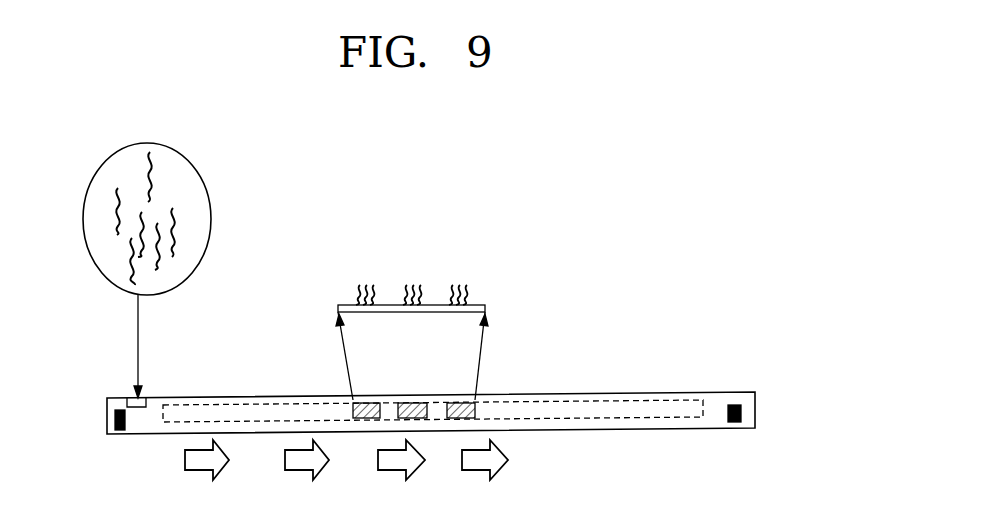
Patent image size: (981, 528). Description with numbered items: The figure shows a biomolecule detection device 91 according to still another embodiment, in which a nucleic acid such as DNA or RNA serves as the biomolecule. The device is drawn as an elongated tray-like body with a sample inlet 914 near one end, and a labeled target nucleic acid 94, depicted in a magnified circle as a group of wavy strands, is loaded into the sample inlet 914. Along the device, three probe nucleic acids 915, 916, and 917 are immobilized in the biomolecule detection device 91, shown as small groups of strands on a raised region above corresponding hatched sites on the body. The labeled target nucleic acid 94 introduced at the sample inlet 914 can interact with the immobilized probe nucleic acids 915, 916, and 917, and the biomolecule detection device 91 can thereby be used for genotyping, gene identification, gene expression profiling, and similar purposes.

The biomolecule detection device 91 is at (727, 392).
The sample inlet 914 is at (140, 402).
The labeled target nucleic acid 94 is at (152, 168).
The probe nucleic acid 915 is at (364, 278).
The probe nucleic acid 916 is at (415, 278).
The probe nucleic acid 917 is at (460, 278).